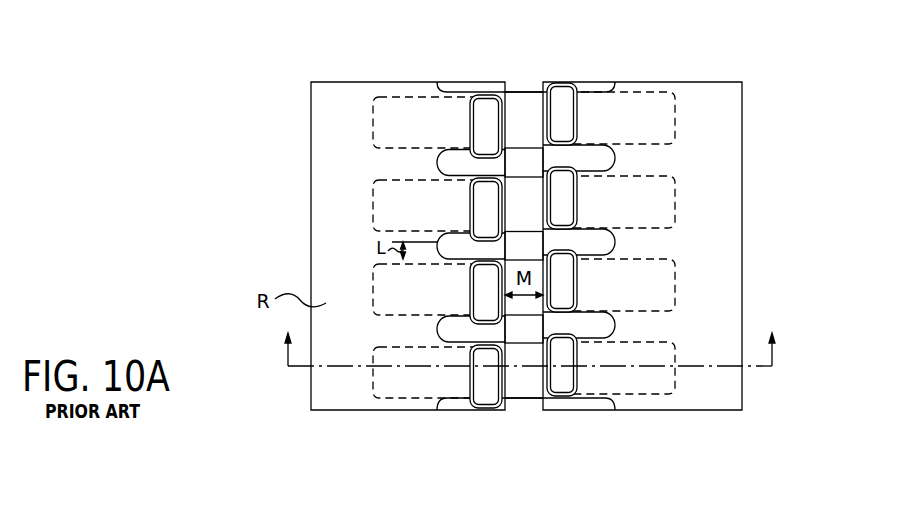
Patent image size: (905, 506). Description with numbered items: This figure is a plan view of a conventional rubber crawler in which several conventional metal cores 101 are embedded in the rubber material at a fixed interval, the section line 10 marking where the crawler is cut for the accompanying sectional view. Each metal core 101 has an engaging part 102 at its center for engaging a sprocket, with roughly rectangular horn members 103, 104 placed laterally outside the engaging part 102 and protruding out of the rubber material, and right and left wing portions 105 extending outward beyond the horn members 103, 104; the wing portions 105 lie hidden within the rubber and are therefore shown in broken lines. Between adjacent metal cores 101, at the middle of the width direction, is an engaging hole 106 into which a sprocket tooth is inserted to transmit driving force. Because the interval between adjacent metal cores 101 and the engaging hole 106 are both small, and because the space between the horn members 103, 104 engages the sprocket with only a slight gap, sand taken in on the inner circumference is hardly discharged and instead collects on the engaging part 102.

The section line 10- 10 is at (531, 349).
The metal core 101 is at (655, 92).
The engaging part 102 is at (525, 385).
The horn member 103 is at (482, 108).
The horn member 104 is at (563, 93).
The wing portion 105 is at (380, 122).
The engaging hole 106 is at (527, 158).